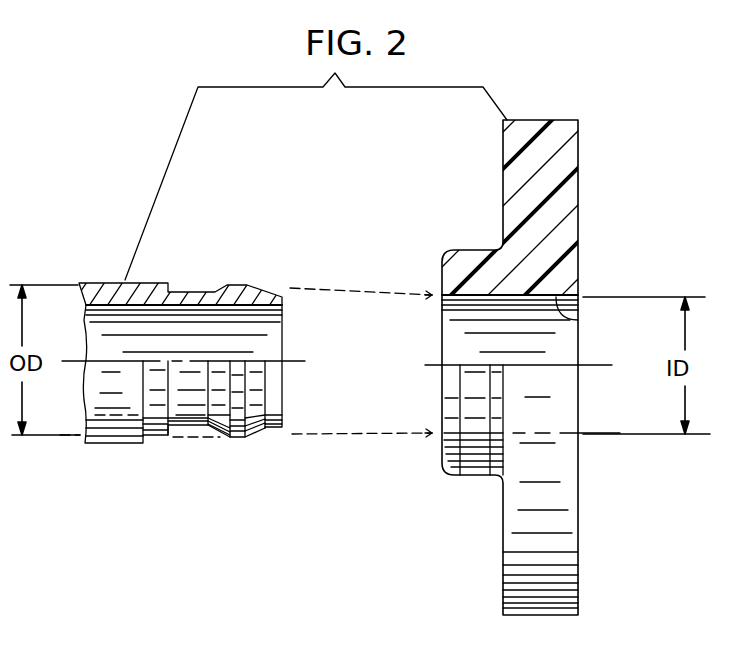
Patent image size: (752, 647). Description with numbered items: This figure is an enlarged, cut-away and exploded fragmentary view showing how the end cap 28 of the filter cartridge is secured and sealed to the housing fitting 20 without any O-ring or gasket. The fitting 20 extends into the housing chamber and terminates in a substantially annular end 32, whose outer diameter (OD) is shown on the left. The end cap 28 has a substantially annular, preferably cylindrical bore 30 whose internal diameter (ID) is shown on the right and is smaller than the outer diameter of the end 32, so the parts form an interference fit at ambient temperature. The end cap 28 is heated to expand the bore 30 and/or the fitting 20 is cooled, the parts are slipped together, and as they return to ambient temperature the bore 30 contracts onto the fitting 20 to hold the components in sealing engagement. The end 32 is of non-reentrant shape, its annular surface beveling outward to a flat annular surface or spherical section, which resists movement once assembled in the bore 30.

The fitting 20 is at (110, 443).
The end of the fitting 32 is at (240, 437).
The end cap 28 is at (503, 538).
The bore 30 is at (565, 312).